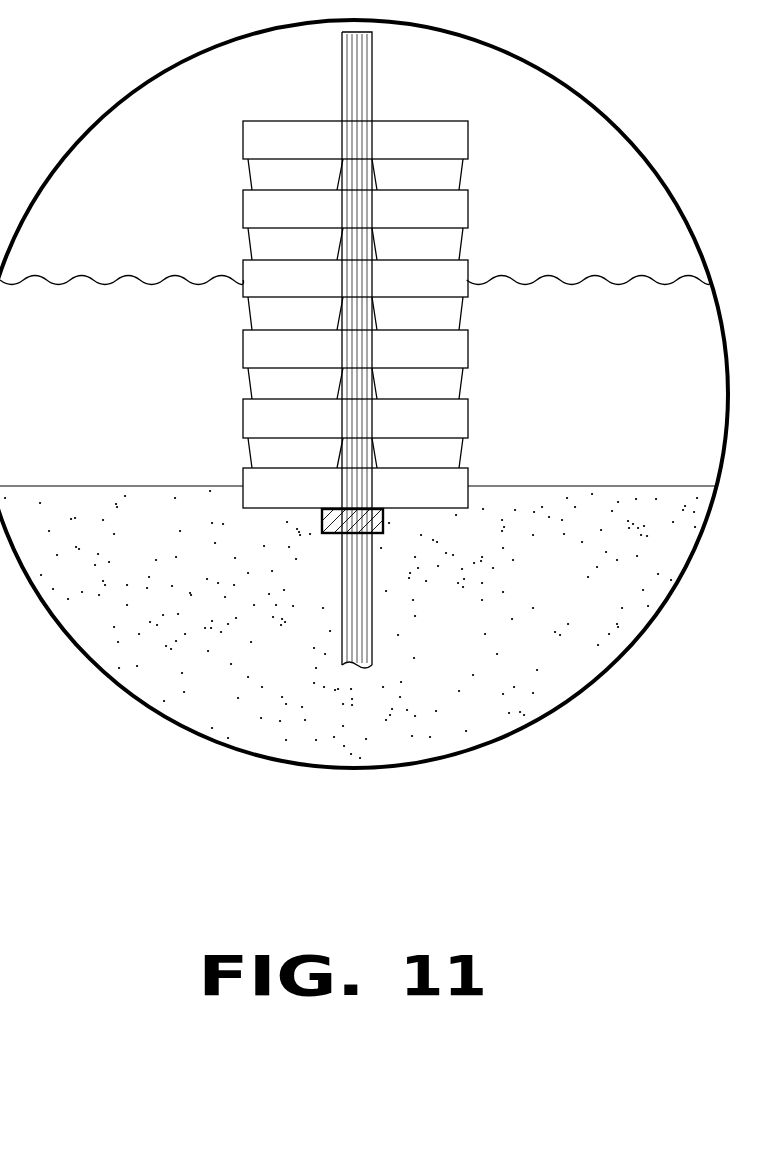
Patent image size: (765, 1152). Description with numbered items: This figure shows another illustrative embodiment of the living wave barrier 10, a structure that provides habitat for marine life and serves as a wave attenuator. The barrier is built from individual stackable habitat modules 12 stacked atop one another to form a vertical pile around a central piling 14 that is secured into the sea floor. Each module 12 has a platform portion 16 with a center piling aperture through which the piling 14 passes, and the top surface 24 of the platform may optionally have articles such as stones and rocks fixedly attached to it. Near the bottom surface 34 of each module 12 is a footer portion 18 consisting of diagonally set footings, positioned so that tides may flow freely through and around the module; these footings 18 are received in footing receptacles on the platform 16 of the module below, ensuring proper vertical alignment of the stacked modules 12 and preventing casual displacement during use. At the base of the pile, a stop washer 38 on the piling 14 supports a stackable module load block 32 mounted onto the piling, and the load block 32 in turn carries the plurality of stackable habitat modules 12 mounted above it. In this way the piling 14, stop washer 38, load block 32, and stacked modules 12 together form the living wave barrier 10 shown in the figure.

The living wave barrier 10 is at (584, 189).
The stackable habitat module 12 is at (257, 255).
The piling 14 is at (373, 83).
The platform portion 16 is at (296, 226).
The footer portion 18 is at (270, 315).
The top surface 24 is at (282, 122).
The load block 32 is at (455, 496).
The bottom surface 34 is at (571, 147).
The stop washer 38 is at (373, 523).